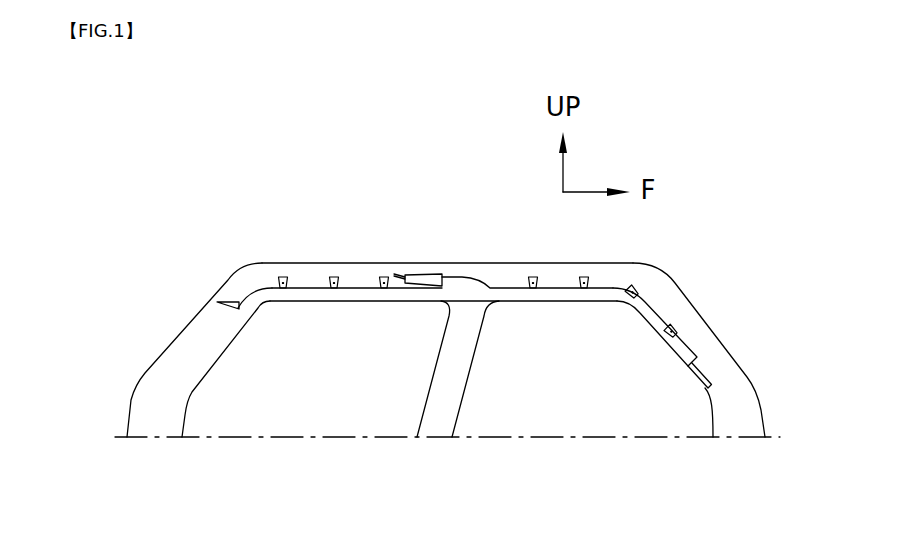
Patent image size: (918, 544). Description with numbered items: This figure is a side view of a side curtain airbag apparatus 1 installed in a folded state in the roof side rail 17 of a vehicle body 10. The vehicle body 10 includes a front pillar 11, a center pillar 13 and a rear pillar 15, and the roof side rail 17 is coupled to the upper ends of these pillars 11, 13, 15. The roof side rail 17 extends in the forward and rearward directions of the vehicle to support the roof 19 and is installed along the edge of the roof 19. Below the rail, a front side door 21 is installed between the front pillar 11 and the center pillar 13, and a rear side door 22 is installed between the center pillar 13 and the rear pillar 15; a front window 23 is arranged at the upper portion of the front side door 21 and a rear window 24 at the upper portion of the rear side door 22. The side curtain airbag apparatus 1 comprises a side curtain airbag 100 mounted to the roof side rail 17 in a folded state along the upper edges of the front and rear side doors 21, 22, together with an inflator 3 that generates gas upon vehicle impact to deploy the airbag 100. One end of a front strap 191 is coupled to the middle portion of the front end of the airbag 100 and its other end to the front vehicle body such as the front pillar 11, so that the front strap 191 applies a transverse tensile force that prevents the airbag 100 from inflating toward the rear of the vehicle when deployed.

The side curtain airbag apparatus 1 is at (500, 268).
The inflator 3 is at (427, 276).
The vehicle body 10 is at (192, 287).
The front pillar 11 is at (688, 320).
The center pillar 13 is at (435, 425).
The rear pillar 15 is at (173, 367).
The roof side rail 17 is at (363, 278).
The roof 19 is at (297, 262).
The front side door 21 is at (607, 438).
The rear side door 22 is at (213, 438).
The front window 23 is at (564, 383).
The rear window 24 is at (302, 383).
The side curtain airbag 100 is at (635, 307).
The front strap 191 is at (702, 375).